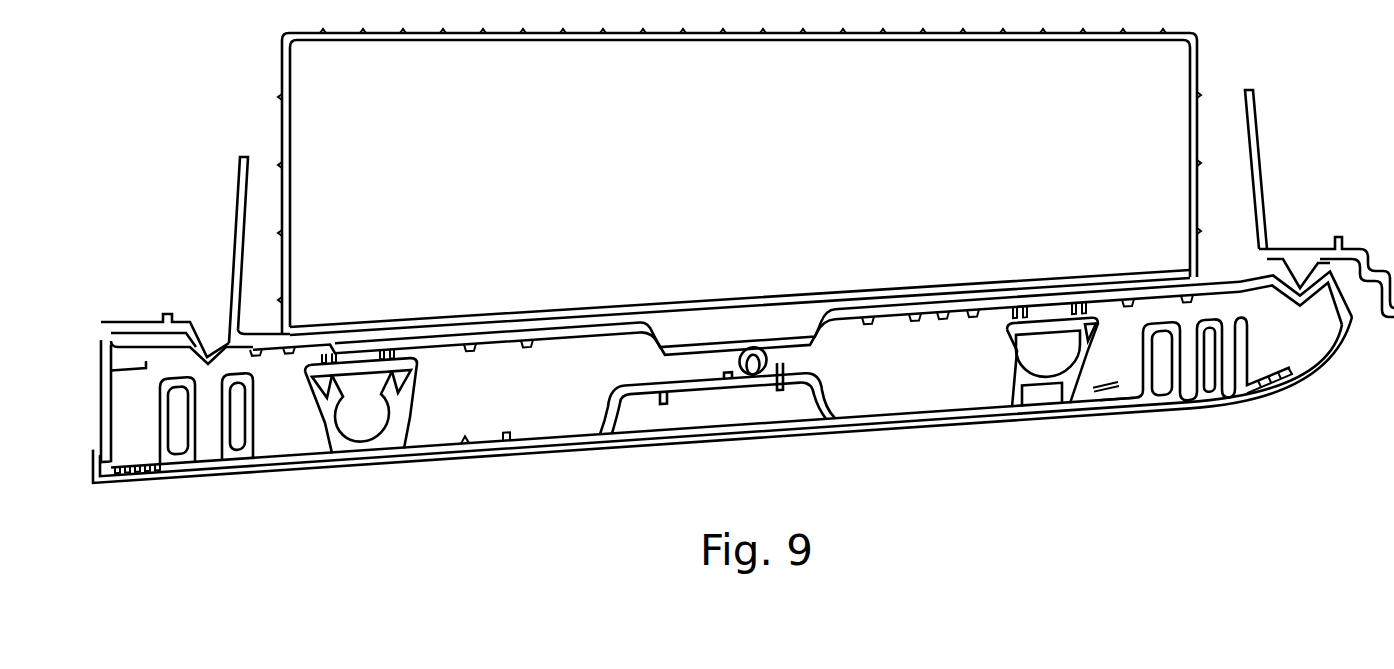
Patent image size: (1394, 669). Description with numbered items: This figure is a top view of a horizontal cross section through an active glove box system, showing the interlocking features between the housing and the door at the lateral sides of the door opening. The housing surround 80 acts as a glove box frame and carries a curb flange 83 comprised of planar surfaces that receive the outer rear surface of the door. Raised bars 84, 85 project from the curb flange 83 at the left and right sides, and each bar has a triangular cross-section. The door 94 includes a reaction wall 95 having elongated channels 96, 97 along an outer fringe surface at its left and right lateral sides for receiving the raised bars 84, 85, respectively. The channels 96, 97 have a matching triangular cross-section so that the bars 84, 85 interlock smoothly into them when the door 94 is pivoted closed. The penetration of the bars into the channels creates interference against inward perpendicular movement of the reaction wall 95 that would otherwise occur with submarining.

The housing surround 80 is at (228, 185).
The curb flange 83 is at (122, 333).
The raised bar 84 is at (207, 352).
The raised bar 85 is at (1299, 266).
The door 94 is at (483, 475).
The reaction wall 95 is at (552, 342).
The elongated channel 96 is at (222, 366).
The elongated channel 97 is at (1308, 298).